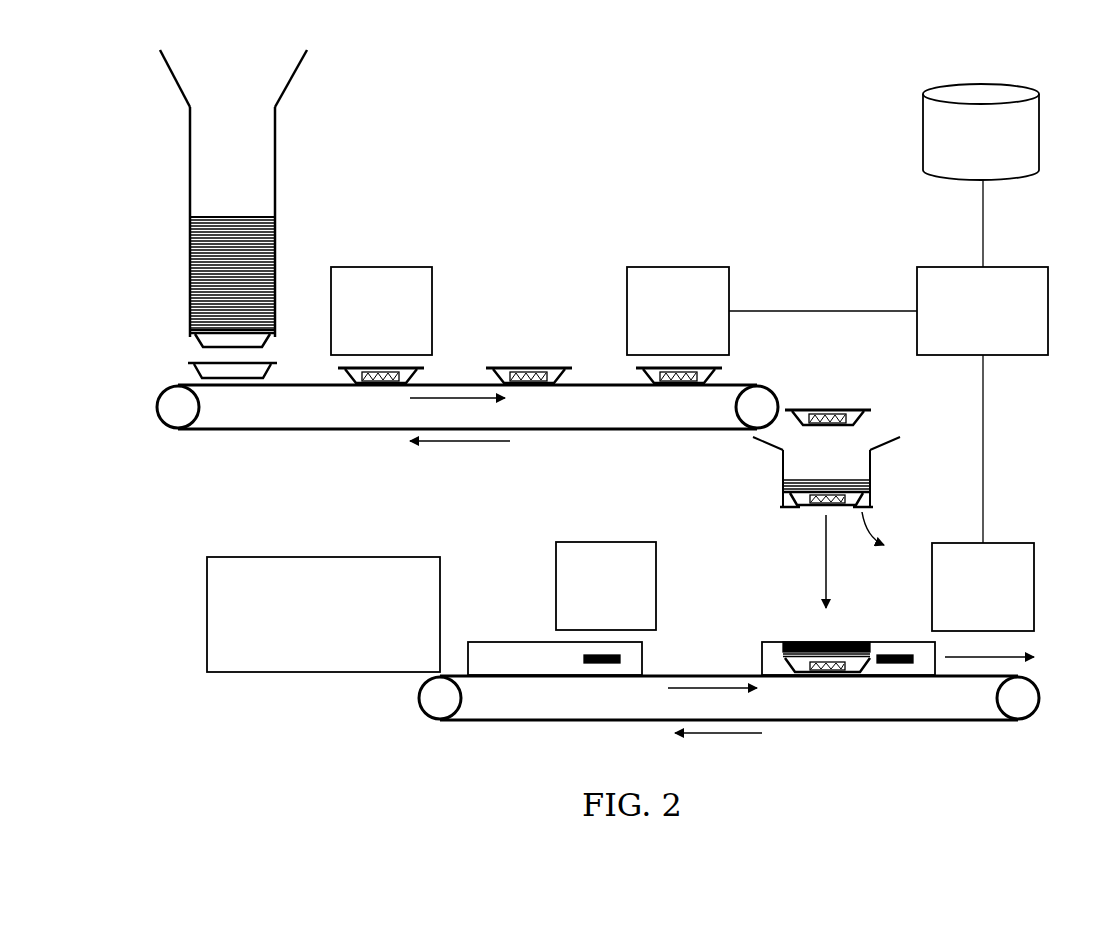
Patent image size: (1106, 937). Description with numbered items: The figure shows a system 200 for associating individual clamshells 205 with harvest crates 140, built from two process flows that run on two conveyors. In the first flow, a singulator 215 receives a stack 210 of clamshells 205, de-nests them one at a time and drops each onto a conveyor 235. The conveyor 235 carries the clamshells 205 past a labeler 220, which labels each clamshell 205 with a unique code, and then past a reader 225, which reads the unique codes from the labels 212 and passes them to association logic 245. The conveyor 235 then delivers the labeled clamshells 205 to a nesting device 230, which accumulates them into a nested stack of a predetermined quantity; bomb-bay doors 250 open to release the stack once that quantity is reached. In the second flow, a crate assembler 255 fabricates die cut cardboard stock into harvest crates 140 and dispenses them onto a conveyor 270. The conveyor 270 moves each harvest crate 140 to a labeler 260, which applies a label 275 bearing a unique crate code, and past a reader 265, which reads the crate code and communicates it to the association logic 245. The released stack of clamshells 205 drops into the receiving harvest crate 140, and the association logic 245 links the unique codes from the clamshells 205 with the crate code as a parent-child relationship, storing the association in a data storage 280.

The system 200 is at (673, 68).
The clamshell 205 is at (190, 374).
The stack 210 is at (230, 216).
The label 212 is at (636, 369).
The singulator 215 is at (275, 200).
The labeler 220 is at (432, 285).
The reader 225 is at (729, 285).
The nesting device 230 is at (783, 462).
The conveyor 235 is at (258, 431).
The association logic 245 is at (943, 267).
The bomb-bay doors 250 is at (792, 510).
The crate assembler 255 is at (363, 557).
The labeler 260 is at (580, 542).
The reader 265 is at (1003, 543).
The conveyor 270 is at (440, 721).
The label 275 is at (584, 659).
The data storage 280 is at (923, 117).
The harvest crate 140 is at (642, 655).